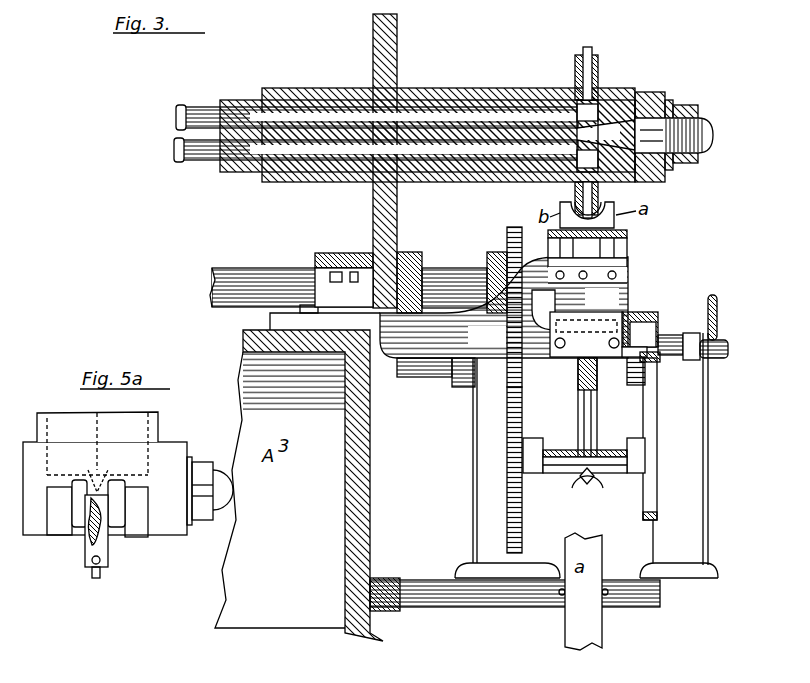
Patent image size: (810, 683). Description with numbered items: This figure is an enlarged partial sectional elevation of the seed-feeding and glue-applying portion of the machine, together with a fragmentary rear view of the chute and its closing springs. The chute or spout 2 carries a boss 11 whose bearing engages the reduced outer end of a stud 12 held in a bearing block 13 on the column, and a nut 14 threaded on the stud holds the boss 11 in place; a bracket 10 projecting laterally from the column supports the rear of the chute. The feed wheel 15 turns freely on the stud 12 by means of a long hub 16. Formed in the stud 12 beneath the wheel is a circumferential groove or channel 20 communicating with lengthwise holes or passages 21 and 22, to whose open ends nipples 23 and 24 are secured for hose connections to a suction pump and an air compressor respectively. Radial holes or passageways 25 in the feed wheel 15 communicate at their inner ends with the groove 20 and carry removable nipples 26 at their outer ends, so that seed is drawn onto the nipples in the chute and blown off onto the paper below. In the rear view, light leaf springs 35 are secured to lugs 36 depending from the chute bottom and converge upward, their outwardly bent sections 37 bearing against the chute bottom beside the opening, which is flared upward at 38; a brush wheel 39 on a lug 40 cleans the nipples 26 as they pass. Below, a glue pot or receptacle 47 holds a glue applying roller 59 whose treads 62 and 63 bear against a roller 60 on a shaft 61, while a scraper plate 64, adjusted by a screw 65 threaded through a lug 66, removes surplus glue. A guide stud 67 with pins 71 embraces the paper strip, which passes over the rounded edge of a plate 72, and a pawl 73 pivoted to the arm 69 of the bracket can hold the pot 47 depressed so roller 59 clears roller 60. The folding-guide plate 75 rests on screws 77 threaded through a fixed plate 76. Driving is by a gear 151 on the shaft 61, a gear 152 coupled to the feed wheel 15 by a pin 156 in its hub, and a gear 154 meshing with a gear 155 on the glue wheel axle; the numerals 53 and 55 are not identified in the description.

In FIG. 3, the bracket 10 is at (504, 307).
In FIG. 3, the boss 11 is at (665, 96).
In FIG. 5a, the boss 11 is at (175, 444).
In FIG. 3, the stud 12 is at (232, 172).
In FIG. 3, the bearing block 13 is at (330, 100).
In FIG. 3, the nut 14 is at (700, 112).
In FIG. 5a, the nut 14 is at (203, 462).
In FIG. 3, the feed wheel 15 is at (580, 100).
In FIG. 5a, the feed wheel 15 is at (108, 566).
In FIG. 3, the hub 16 is at (540, 94).
In FIG. 3, the circumferential groove or channel 20 is at (640, 183).
In FIG. 3, the hole or passage 21 is at (272, 115).
In FIG. 3, the hole or passage 22 is at (300, 150).
In FIG. 3, the nipple 23 is at (200, 112).
In FIG. 3, the nipple 24 is at (198, 160).
In FIG. 3, the radial holes or passageways 25 is at (578, 186).
In FIG. 3, the removable nipples 26 is at (588, 50).
In FIG. 5a, the removable nipples 26 is at (92, 578).
In FIG. 3, the glue pot or receptacle 47 is at (669, 522).
In FIG. 3, the shaft bearing 53 is at (640, 310).
In FIG. 3, the lever 55 is at (694, 336).
In FIG. 3, the glue applying roller 59 is at (580, 405).
In FIG. 3, the roller 60 is at (602, 297).
In FIG. 3, the shaft 61 is at (285, 258).
In FIG. 3, the tread 62 is at (580, 386).
In FIG. 3, the tread 63 is at (598, 407).
In FIG. 3, the scraper plate 64 is at (560, 475).
In FIG. 3, the screw 65 is at (587, 486).
In FIG. 3, the lug 66 is at (603, 480).
In FIG. 3, the guide stud 67 is at (495, 602).
In FIG. 3, the arm 69 is at (632, 362).
In FIG. 3, the pins 71 is at (646, 292).
In FIG. 3, the plate 72 is at (586, 334).
In FIG. 3, the pawl 73 is at (665, 420).
In FIG. 3, the plate 75 is at (628, 240).
In FIG. 3, the fixed plate 76 is at (630, 266).
In FIG. 3, the screws 77 is at (622, 280).
In FIG. 3, the gear 151 is at (383, 420).
In FIG. 3, the gear 152 is at (383, 216).
In FIG. 3, the gear 154 is at (507, 241).
In FIG. 3, the gear 155 is at (500, 432).
In FIG. 3, the pin 156 is at (505, 98).
In FIG. 5a, the chute or spout 2 is at (64, 424).
In FIG. 5a, the leaf springs 35 is at (85, 500).
In FIG. 5a, the lugs 36 is at (94, 512).
In FIG. 5a, the lateral sections 37 is at (107, 466).
In FIG. 5a, the flared portion 38 is at (98, 461).
In FIG. 5a, the brush wheel 39 is at (92, 535).
In FIG. 5a, the lug 40 is at (80, 525).